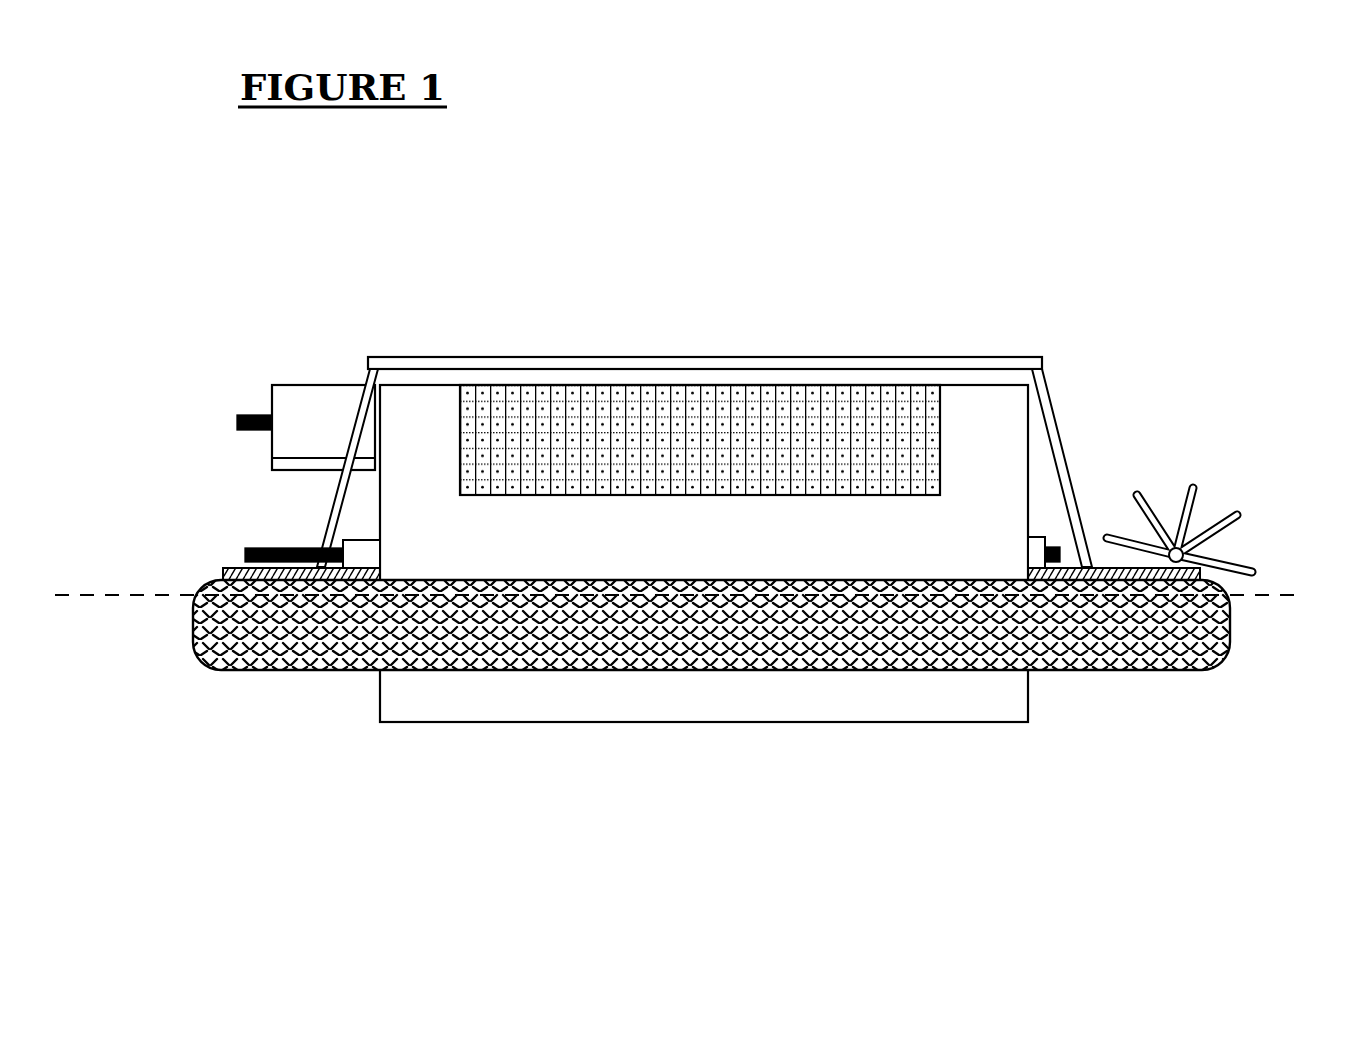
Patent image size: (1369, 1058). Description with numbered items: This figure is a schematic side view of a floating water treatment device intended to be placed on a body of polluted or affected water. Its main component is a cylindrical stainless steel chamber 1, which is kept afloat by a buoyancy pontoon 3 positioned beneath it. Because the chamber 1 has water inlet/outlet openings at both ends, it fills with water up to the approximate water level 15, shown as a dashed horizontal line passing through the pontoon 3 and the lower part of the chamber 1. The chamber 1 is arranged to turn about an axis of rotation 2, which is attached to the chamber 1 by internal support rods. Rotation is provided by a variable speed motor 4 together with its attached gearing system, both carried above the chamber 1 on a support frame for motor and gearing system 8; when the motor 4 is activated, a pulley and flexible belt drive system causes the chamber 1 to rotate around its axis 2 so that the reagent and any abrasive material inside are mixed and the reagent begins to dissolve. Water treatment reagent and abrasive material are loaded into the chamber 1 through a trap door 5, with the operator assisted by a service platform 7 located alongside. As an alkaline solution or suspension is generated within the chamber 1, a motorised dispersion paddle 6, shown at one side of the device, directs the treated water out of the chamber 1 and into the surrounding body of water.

The stainless steel chamber 1 is at (433, 380).
The axis of rotation of chamber 2 is at (250, 545).
The buoyancy pontoon 3 is at (337, 673).
The variable speed motor 4 is at (312, 383).
The trap door for loading reagents 5 is at (862, 405).
The motorised dispersion paddle 6 is at (1173, 512).
The service platform 7 is at (222, 568).
The support frame for motor and gearing system 8 is at (695, 357).
The approximate water level 15 is at (1302, 593).